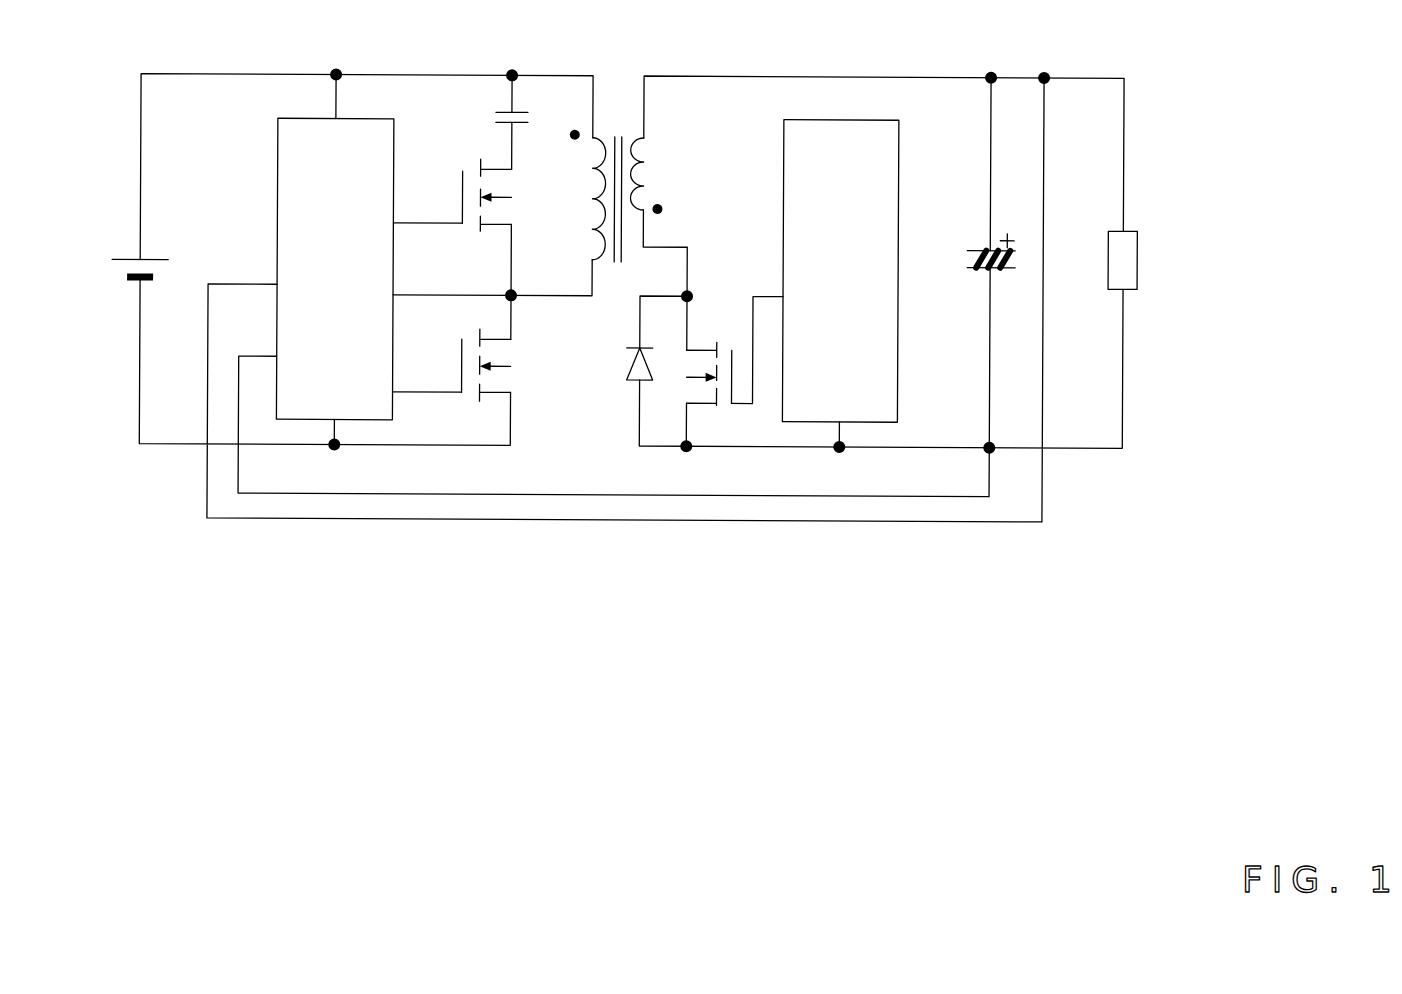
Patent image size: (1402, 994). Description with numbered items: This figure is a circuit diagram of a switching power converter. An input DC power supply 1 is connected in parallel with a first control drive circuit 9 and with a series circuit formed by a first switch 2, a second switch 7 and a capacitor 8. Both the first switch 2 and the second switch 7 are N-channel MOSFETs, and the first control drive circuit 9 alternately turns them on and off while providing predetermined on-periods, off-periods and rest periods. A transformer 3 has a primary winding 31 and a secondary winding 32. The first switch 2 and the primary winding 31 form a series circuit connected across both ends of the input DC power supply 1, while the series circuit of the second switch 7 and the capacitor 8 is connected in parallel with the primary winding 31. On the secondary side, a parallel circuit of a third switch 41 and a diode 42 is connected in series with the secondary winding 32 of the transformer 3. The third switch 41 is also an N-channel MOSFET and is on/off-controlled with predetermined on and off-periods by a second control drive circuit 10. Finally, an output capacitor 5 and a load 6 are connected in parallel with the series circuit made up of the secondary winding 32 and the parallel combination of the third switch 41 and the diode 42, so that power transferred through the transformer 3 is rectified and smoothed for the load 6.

The input DC power supply 1 is at (131, 258).
The first switch 2 is at (513, 374).
The transformer 3 is at (633, 139).
The primary winding 31 is at (586, 185).
The secondary winding 32 is at (648, 173).
The third switch 41 is at (726, 412).
The diode 42 is at (632, 383).
The output capacitor 5 is at (977, 247).
The load 6 is at (1142, 278).
The second switch 7 is at (470, 172).
The capacitor 8 is at (495, 112).
The first control drive circuit 9 is at (298, 118).
The second control drive circuit 10 is at (783, 143).